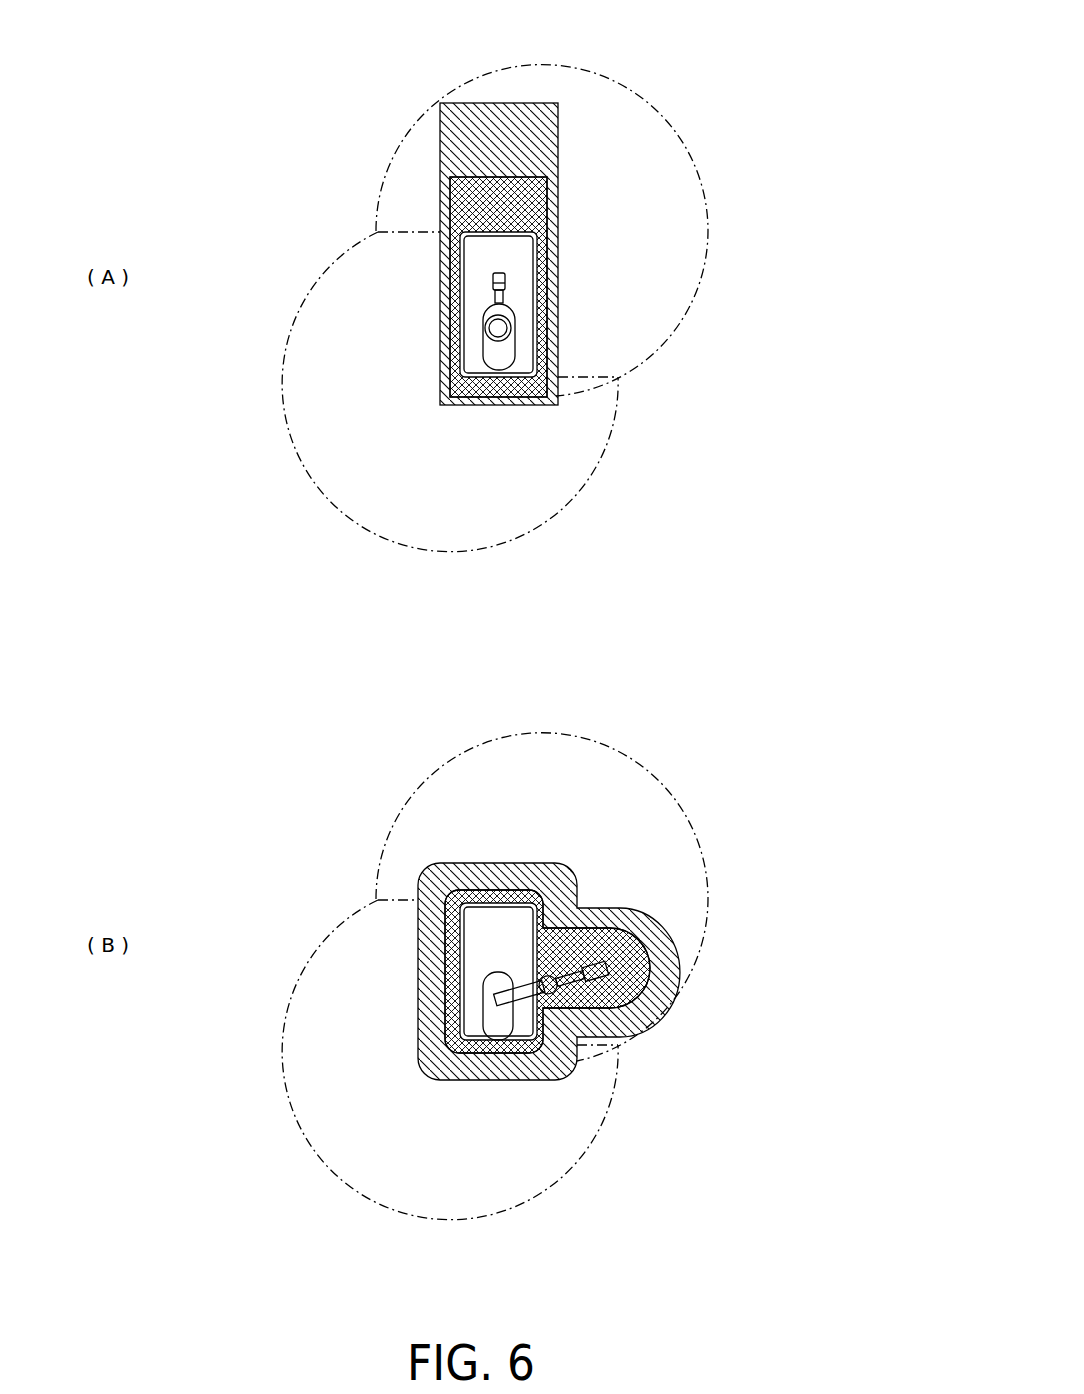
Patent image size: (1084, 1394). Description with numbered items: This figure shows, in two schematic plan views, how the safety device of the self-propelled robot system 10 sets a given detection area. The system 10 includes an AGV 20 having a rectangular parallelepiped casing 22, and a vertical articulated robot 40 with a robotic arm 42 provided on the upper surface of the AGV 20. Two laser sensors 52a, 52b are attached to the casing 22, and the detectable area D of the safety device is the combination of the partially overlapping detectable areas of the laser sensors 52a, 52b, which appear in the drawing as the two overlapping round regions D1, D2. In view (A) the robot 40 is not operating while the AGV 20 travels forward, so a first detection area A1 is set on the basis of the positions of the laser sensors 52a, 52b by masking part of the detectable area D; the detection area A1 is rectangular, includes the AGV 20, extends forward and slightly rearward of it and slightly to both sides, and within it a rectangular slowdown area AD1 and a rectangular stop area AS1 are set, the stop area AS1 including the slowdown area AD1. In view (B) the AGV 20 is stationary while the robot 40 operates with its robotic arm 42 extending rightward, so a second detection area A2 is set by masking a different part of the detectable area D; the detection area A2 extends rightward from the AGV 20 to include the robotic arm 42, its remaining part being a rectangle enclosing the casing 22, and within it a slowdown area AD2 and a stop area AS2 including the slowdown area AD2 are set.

The self-propelled robot system 10 is at (498, 643).
The AGV 20 is at (474, 291).
The casing 22 is at (467, 260).
The vertical articulated robot 40 is at (507, 348).
The robotic arm 42 is at (558, 288).
The laser sensor 52a is at (558, 200).
The laser sensor 52b is at (460, 375).
The detection area A1 is at (655, 42).
The slowdown area AD1 is at (548, 103).
The stop area AS1 is at (558, 143).
The detection area A2 is at (655, 710).
The slowdown area AD2 is at (503, 863).
The stop area AS2 is at (533, 863).
The detectable area D is at (456, 639).
The first sub-region D1 is at (400, 140).
The second sub-region D2 is at (327, 263).